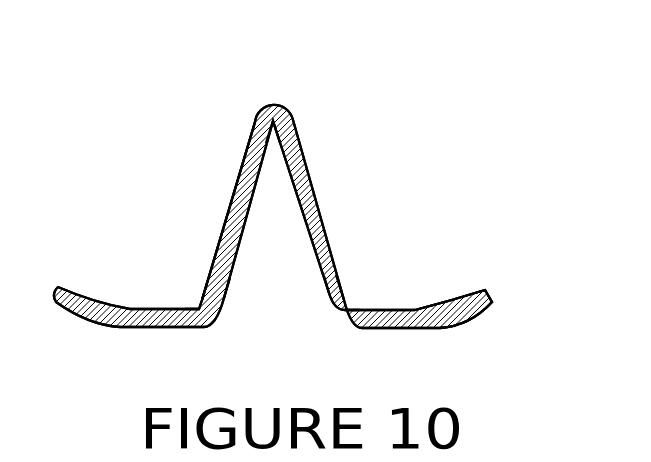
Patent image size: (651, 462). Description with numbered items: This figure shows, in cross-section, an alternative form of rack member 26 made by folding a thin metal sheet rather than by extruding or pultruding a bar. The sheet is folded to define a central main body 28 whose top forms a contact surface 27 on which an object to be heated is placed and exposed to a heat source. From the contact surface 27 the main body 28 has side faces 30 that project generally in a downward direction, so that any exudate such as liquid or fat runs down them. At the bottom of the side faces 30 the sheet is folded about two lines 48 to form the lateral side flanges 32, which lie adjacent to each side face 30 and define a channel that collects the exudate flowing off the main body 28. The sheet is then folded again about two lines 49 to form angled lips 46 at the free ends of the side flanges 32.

The member 26 is at (323, 132).
The contact surface 27 is at (273, 104).
The main body 28 is at (245, 141).
The side faces 30 is at (236, 179).
The side flanges 32 is at (163, 327).
The angled lips 46 is at (494, 302).
The fold lines 48 is at (197, 307).
The fold lines 49 is at (108, 327).